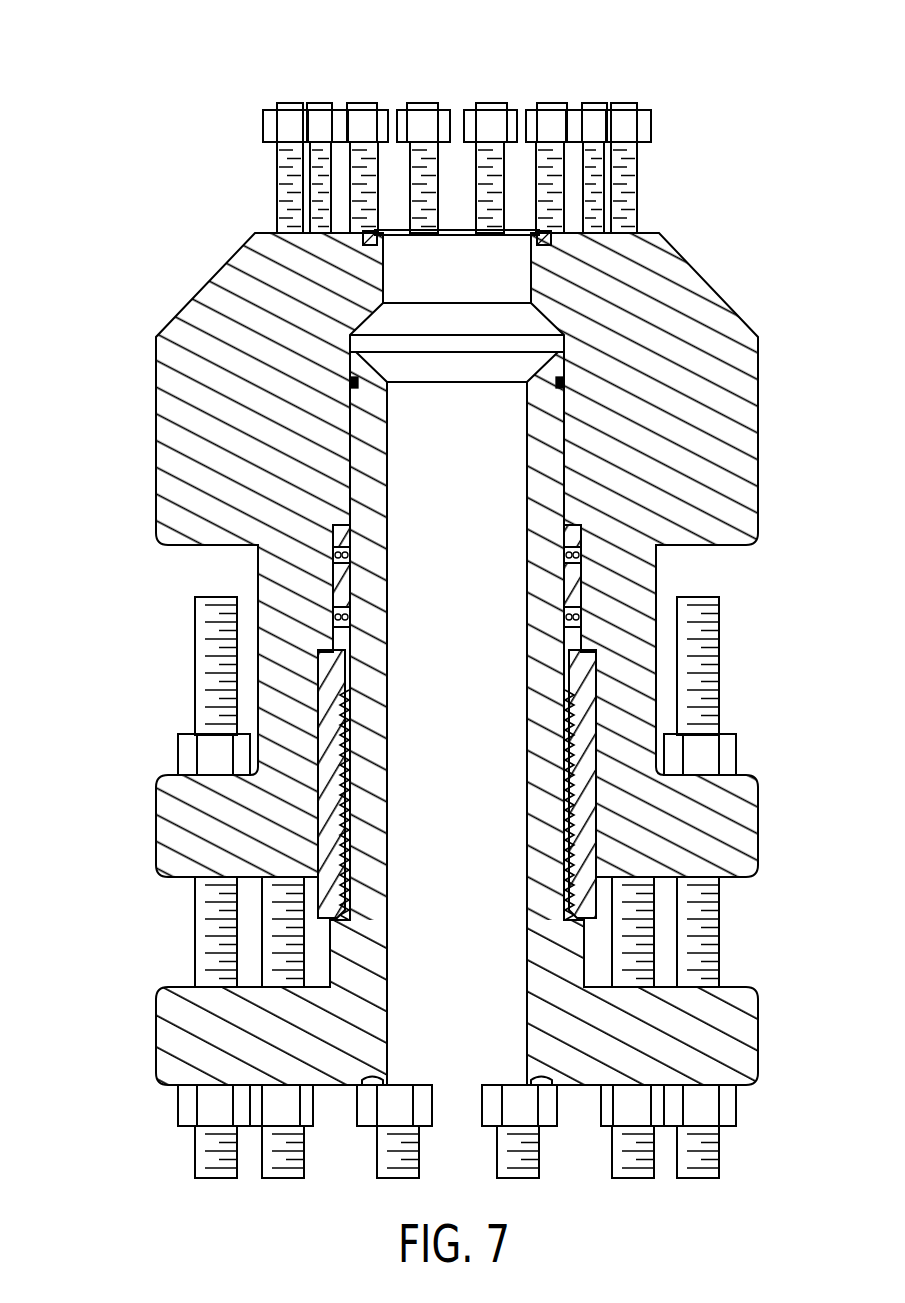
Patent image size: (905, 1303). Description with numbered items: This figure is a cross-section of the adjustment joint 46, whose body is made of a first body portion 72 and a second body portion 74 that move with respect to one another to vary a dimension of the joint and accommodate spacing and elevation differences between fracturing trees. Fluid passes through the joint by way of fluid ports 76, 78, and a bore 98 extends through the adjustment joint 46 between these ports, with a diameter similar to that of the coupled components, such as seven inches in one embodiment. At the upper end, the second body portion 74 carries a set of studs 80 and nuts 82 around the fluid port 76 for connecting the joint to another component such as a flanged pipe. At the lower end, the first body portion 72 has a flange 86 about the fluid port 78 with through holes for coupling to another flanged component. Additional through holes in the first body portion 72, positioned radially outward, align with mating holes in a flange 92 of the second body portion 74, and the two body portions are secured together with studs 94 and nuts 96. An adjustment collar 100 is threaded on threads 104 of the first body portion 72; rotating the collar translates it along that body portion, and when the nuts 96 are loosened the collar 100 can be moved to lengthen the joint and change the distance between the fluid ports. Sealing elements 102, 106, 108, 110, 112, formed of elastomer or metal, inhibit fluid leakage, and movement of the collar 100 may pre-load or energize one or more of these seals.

The adjustment joint 46 is at (121, 77).
The first body portion 72 is at (168, 1032).
The second body portion 74 is at (212, 293).
The fluid port 76 is at (463, 250).
The fluid port 78 is at (447, 1097).
The studs 80 is at (283, 188).
The nuts 82 is at (362, 127).
The flange 86 is at (742, 1037).
The flange 92 is at (748, 818).
The studs 94 is at (206, 654).
The nuts 96 is at (186, 752).
The bore 98 is at (390, 1025).
The adjustment collar 100 is at (335, 798).
The sealing element 102 is at (350, 690).
The threads 104 is at (356, 881).
The seal 106 is at (345, 582).
The seal 108 is at (346, 530).
The sealing element 110 is at (360, 556).
The sealing element 112 is at (360, 384).